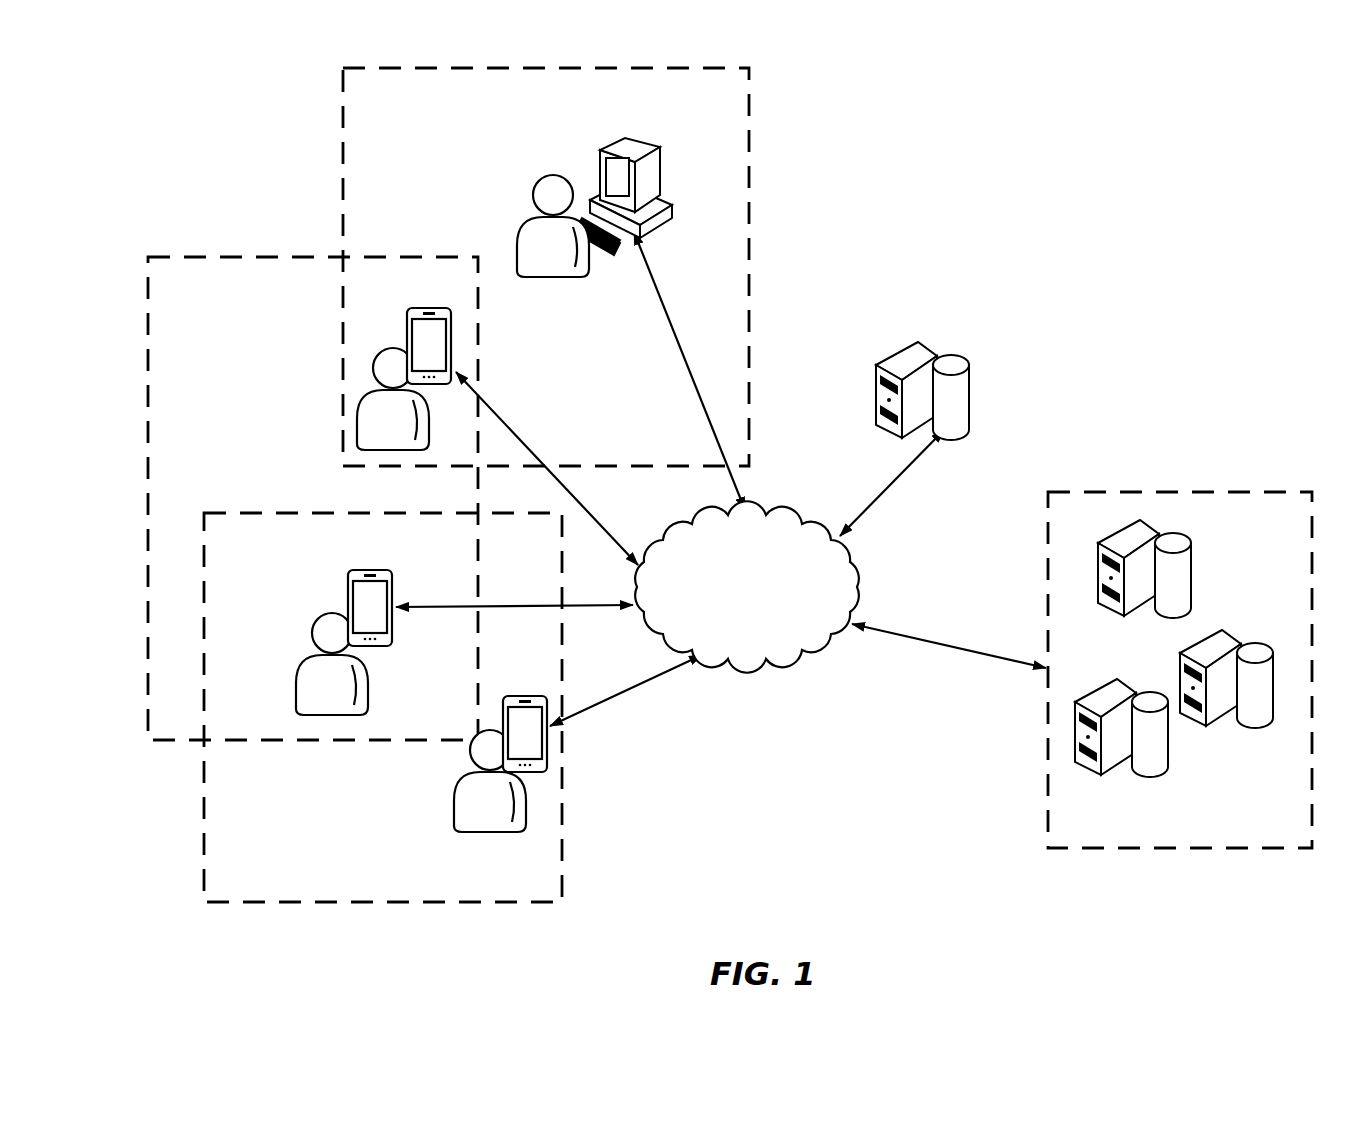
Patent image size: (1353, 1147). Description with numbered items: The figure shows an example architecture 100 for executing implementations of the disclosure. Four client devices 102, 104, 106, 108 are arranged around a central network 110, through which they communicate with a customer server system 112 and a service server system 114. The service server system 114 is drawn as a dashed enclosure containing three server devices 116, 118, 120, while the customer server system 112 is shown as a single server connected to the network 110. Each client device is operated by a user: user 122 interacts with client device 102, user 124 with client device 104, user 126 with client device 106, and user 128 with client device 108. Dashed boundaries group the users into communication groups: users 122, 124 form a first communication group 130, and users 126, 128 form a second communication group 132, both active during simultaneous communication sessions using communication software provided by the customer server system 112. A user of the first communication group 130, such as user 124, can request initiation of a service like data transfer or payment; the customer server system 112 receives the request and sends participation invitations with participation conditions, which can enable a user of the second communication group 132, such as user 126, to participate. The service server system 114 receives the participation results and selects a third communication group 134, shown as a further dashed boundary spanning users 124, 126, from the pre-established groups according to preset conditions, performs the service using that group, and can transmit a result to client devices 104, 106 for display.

The architecture 100 is at (150, 130).
The client device 102 is at (598, 150).
The client device 104 is at (418, 308).
The client device 106 is at (365, 572).
The client device 108 is at (527, 696).
The network 110 is at (800, 655).
The customer server system 112 is at (970, 370).
The service server system 114 is at (1140, 492).
The server device 116 is at (1193, 578).
The server device 118 is at (1218, 725).
The server device 120 is at (1110, 778).
The user 122 is at (552, 275).
The user 124 is at (393, 448).
The user 126 is at (332, 715).
The user 128 is at (488, 832).
The first communication group 130 is at (750, 200).
The second communication group 132 is at (563, 760).
The third communication group 134 is at (222, 257).